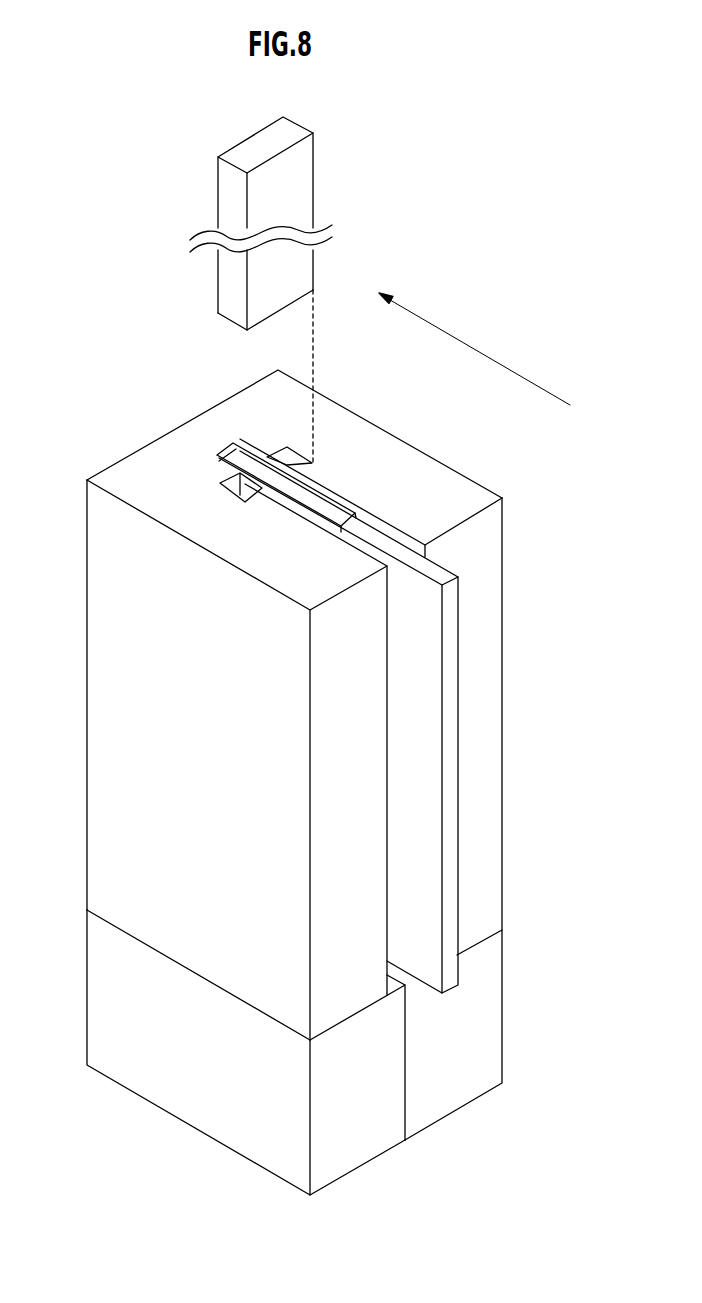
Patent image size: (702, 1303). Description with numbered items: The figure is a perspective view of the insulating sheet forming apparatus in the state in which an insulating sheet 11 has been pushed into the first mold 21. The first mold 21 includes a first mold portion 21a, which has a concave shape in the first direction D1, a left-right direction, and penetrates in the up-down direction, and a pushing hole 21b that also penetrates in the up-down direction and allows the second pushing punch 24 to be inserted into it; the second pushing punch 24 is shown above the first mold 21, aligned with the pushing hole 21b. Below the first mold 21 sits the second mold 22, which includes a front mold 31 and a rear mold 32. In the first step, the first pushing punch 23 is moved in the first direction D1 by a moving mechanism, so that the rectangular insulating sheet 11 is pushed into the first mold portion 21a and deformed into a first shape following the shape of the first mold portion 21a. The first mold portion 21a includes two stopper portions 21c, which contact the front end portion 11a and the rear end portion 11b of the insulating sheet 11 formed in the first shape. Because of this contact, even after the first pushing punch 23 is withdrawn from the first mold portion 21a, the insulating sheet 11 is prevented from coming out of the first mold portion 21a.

The insulating sheet 11 is at (231, 440).
The front end portion 11a is at (318, 527).
The rear end portion 11b is at (350, 491).
The first mold 21 is at (456, 487).
The first mold portion 21a is at (352, 500).
The pushing hole 21b is at (227, 474).
The stopper portion 21c is at (357, 513).
The second mold 22 is at (177, 1140).
The first pushing punch 23 is at (453, 660).
The second pushing punch 24 is at (290, 202).
The front mold 31 is at (362, 1150).
The rear mold 32 is at (455, 1095).
The first direction D1 is at (483, 352).